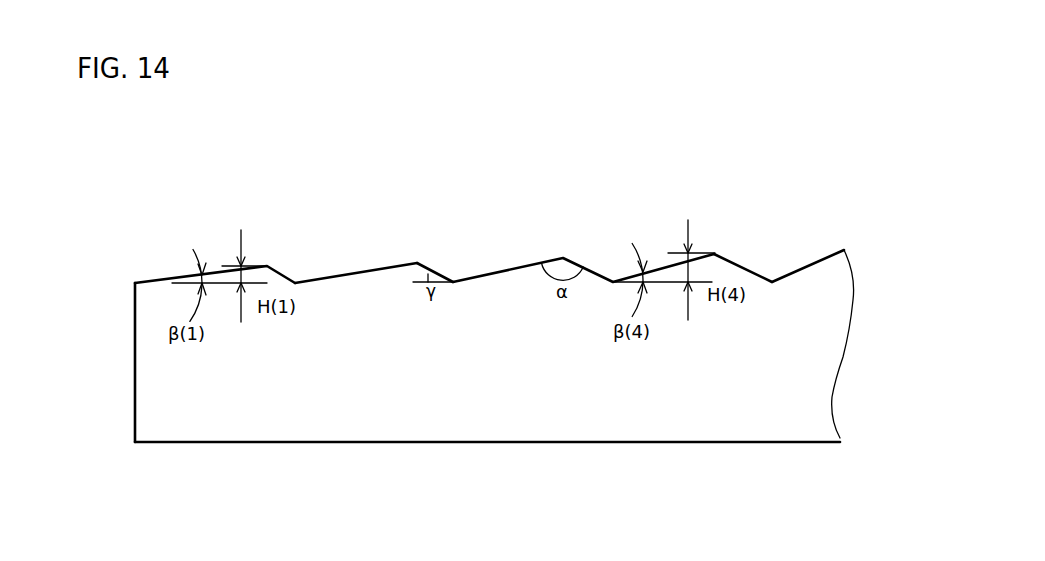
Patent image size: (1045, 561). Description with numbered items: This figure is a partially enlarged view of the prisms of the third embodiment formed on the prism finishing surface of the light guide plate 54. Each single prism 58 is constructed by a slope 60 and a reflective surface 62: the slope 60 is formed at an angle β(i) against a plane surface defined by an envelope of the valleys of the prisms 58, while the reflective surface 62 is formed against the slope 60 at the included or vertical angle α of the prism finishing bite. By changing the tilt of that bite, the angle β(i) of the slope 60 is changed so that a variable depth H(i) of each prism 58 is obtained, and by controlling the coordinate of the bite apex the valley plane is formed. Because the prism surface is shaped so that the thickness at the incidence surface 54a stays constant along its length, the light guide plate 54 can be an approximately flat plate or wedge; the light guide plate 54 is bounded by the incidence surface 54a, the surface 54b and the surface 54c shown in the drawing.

The light guide plate 54 is at (558, 192).
The incidence surface 54a is at (133, 410).
The inclined surface portion 54b is at (761, 264).
The bottom surface of substrate 54c is at (393, 445).
The prism 58 is at (400, 263).
The slope 60 is at (343, 275).
The reflective surface 62 is at (440, 272).